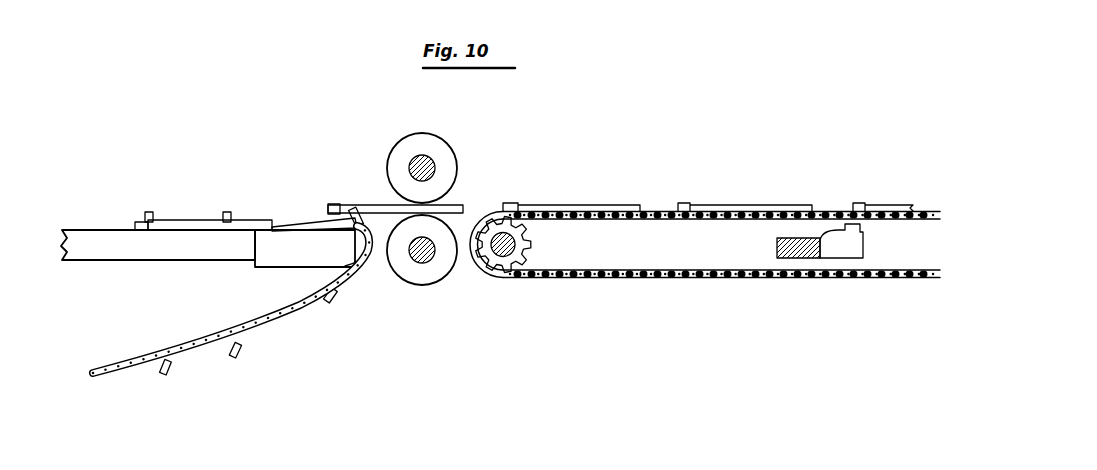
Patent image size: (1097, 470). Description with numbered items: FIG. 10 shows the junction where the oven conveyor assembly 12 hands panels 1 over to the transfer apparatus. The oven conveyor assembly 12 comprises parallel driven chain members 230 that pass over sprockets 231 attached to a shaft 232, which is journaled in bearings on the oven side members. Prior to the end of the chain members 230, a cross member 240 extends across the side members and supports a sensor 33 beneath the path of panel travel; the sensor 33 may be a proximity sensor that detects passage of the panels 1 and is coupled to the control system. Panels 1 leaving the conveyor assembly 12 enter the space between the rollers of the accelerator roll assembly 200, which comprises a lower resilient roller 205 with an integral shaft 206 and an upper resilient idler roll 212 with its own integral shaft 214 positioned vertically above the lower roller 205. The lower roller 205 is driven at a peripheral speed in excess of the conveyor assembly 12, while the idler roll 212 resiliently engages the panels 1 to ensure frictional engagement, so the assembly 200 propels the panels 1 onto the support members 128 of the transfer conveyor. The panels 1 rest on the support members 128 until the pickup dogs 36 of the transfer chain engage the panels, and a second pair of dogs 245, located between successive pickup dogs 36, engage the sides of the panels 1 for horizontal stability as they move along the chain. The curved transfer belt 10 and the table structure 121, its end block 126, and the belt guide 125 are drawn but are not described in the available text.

The panel 1 is at (175, 220).
The curved conveyor belt 10 is at (192, 340).
The oven conveyor assembly 12 is at (690, 282).
The sensor 33 is at (863, 246).
The lugs 36 is at (148, 213).
The table 121 is at (150, 250).
The belt guide 125 is at (330, 278).
The end block 126 is at (270, 262).
The support members 128 is at (305, 224).
The accelerator roll assembly 200 is at (437, 126).
The lower resilient roller 205 is at (405, 270).
The integral shaft 206 is at (430, 262).
The upper resilient idler roll 212 is at (455, 148).
The integral shaft 214 is at (433, 170).
The driven chain members 230 is at (583, 279).
The sprockets 231 is at (520, 240).
The shaft 232 is at (500, 256).
The cross member 240 is at (777, 248).
The second pair of dogs 245 is at (228, 212).